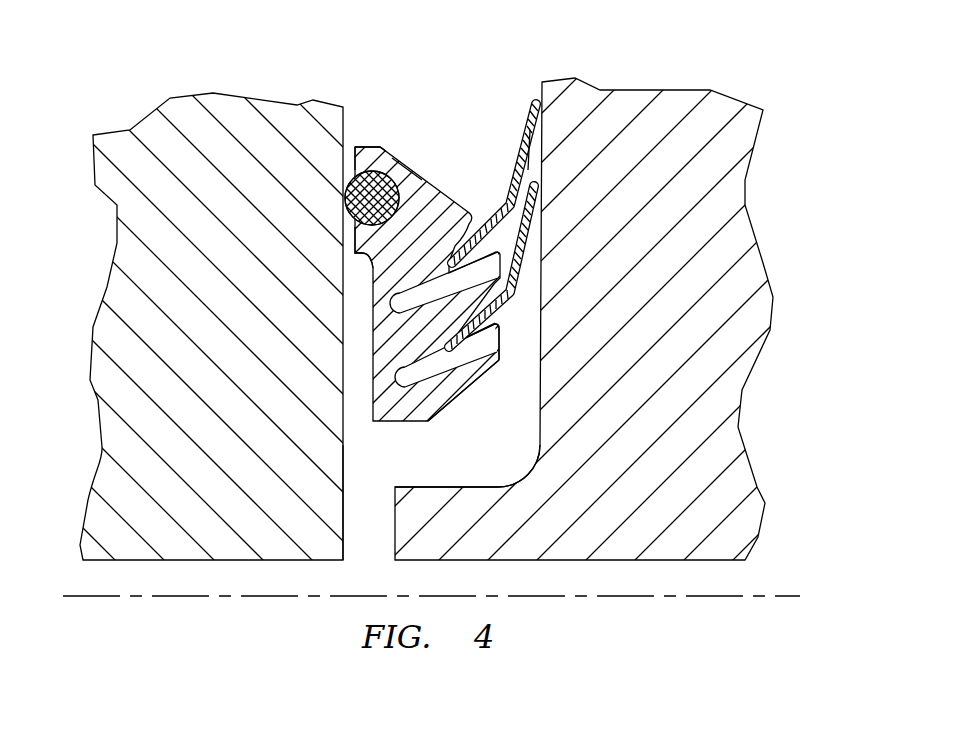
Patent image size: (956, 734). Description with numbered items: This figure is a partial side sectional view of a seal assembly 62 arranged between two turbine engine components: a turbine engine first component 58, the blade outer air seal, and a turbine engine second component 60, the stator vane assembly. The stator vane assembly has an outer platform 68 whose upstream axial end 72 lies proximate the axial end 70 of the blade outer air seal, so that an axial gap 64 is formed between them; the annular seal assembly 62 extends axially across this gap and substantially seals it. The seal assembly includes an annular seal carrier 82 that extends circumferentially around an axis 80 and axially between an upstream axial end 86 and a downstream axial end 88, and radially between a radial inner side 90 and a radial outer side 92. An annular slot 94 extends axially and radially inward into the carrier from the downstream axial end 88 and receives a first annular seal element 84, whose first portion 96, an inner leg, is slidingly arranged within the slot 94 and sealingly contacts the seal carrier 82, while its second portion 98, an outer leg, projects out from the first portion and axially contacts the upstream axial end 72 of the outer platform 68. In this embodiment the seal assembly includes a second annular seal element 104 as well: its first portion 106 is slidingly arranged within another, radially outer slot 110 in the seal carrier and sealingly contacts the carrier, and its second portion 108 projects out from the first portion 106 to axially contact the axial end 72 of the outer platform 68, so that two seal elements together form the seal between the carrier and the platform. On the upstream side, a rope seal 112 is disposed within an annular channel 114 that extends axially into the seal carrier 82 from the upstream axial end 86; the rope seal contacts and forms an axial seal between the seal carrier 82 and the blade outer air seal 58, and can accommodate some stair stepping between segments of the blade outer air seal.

The turbine engine first component 58 is at (221, 306).
The turbine engine second component 60 is at (750, 402).
The seal assembly 62 is at (407, 248).
The axial gap 64 is at (539, 208).
The outer platform 68 is at (520, 320).
The axial end 70 is at (345, 515).
The upstream axial end 72 is at (537, 430).
The axis 80 is at (773, 592).
The seal carrier 82 is at (469, 399).
The seal element 84 is at (533, 296).
The upstream axial end 86 is at (353, 236).
The downstream axial end 88 is at (499, 338).
The radial inner side 90 is at (407, 283).
The radial outer side 92 is at (360, 145).
The annular slot 94 is at (423, 372).
The first portion 96 is at (480, 335).
The second portion 98 is at (539, 178).
The seal element 104 is at (540, 151).
The first portion 106 is at (461, 253).
The second portion 108 is at (527, 132).
The slot 110 is at (406, 300).
The rope seal 112 is at (343, 190).
The annular channel 114 is at (383, 183).